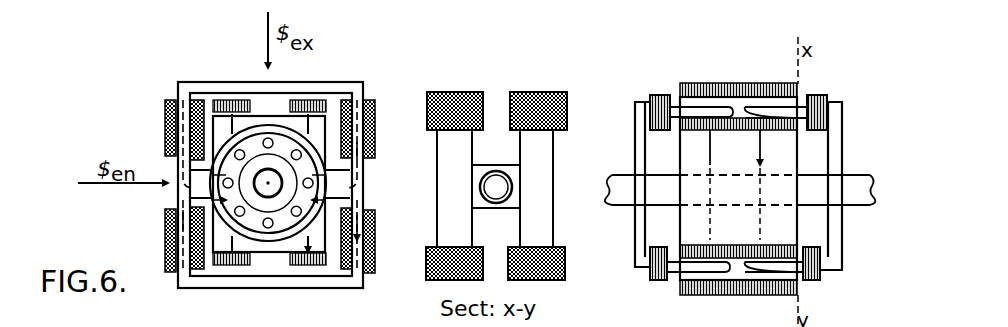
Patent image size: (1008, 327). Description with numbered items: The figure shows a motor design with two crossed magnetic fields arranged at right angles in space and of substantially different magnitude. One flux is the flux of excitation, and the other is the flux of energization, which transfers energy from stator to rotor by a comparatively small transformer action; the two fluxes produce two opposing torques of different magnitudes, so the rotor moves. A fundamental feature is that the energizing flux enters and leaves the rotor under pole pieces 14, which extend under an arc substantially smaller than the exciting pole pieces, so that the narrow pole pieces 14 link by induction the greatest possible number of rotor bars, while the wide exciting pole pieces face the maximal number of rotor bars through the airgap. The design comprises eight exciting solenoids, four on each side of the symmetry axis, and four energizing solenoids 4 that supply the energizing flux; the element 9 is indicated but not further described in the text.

The energizing solenoids 4 is at (390, 252).
The rotor disc 9 is at (236, 214).
The pole pieces 14 is at (190, 186).